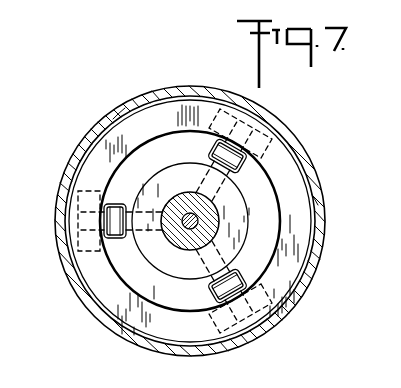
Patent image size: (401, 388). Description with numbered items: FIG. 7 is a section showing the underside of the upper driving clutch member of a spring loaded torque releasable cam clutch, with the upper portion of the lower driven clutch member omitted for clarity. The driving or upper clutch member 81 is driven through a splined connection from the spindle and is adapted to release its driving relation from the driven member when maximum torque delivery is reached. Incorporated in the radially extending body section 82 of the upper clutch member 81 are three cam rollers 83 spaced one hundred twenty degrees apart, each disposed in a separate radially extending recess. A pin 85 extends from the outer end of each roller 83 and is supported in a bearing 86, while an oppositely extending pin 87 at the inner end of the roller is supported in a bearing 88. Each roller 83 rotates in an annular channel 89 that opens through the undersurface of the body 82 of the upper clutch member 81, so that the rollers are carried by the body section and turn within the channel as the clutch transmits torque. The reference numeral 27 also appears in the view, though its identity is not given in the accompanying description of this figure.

The housing 27 is at (113, 119).
The driving or upper clutch member 81 is at (128, 320).
The radially extending body section 82 is at (150, 118).
The cam rollers 83 is at (215, 156).
The pin 85 is at (88, 221).
The bearing 86 is at (97, 257).
The oppositely extending pin 87 is at (160, 258).
The bearing 88 is at (163, 176).
The annular channel 89 is at (312, 195).